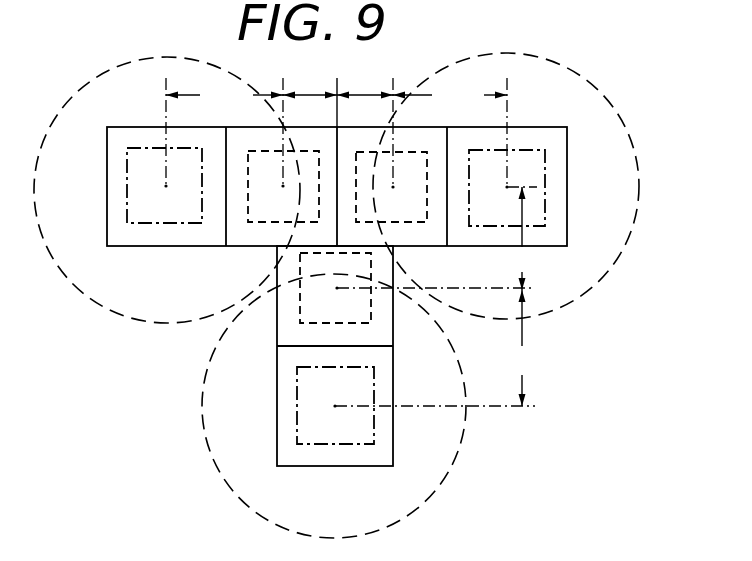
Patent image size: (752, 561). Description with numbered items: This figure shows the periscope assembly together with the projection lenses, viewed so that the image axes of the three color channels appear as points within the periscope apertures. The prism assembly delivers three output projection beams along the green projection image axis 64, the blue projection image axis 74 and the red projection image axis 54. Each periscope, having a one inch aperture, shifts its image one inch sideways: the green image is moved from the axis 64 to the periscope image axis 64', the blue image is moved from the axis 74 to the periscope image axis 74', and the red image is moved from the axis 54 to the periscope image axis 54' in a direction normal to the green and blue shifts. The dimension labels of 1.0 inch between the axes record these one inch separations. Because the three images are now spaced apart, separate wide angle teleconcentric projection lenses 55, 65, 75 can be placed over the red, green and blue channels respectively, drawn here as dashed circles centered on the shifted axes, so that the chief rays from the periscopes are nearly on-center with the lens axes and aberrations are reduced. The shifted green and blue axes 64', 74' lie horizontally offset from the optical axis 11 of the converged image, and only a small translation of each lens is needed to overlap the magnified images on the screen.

The optical axis of the converged image 11 is at (337, 233).
The periscope 60 image axis 64' is at (164, 150).
The green projection image axis 64 is at (283, 150).
The blue projection image axis 74 is at (391, 150).
The periscope 70 image axis 74' is at (507, 152).
The red projection image axis 54 is at (417, 288).
The periscope 50 image axis 54' is at (416, 406).
The projection lens 65 is at (88, 298).
The projection lens 75 is at (603, 93).
The projection lens 55 is at (203, 414).
The 1.0 inch dimension 1.0 is at (356, 244).